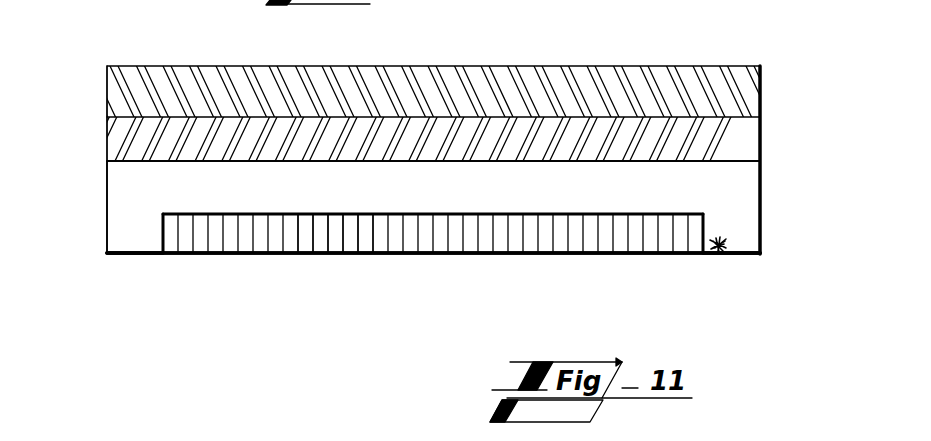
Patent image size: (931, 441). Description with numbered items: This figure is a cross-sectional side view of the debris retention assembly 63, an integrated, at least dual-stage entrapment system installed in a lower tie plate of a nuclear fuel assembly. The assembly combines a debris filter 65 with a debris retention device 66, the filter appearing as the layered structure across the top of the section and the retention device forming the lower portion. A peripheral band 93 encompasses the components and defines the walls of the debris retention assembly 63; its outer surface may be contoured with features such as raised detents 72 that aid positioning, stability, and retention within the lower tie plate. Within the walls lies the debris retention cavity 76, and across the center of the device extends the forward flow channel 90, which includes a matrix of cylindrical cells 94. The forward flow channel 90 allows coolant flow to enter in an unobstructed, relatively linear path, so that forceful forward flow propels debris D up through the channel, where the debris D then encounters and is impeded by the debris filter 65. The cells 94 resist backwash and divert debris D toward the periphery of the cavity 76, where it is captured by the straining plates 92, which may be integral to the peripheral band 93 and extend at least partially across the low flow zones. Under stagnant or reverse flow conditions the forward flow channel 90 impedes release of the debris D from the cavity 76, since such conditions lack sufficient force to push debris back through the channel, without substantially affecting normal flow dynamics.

The debris retention assembly 63 is at (804, 86).
The debris filter 65 is at (765, 68).
The debris retention device 66 is at (765, 166).
The raised detents 72 is at (107, 199).
The debris retention cavity 76 is at (157, 195).
The forward flow channel 90 is at (700, 262).
The straining plates 92 is at (160, 262).
The peripheral band 93 is at (107, 253).
The cylindrical cells 94 is at (384, 214).
The debris D is at (741, 231).